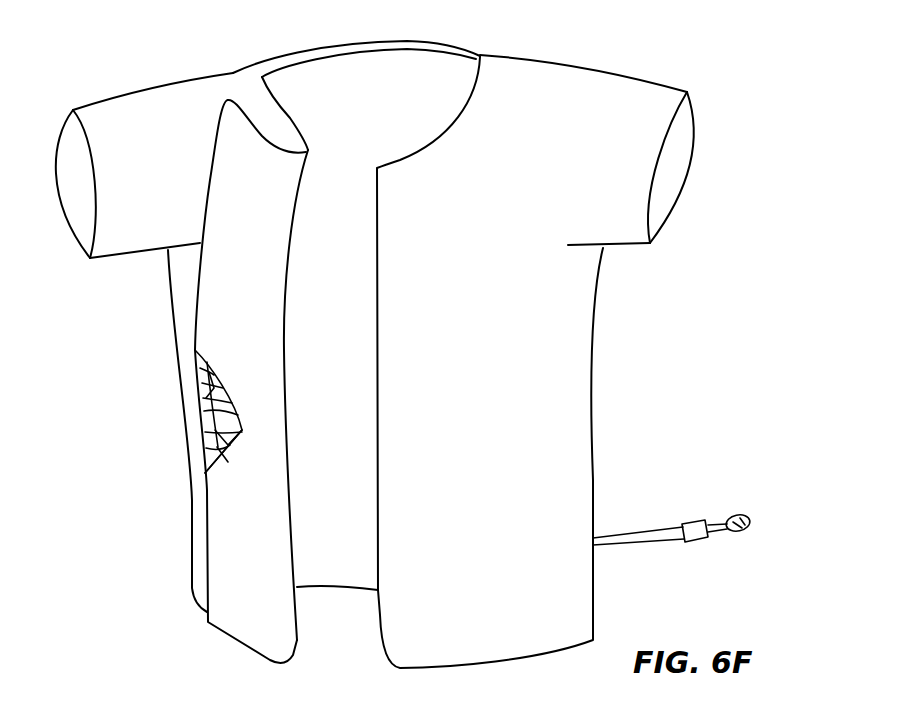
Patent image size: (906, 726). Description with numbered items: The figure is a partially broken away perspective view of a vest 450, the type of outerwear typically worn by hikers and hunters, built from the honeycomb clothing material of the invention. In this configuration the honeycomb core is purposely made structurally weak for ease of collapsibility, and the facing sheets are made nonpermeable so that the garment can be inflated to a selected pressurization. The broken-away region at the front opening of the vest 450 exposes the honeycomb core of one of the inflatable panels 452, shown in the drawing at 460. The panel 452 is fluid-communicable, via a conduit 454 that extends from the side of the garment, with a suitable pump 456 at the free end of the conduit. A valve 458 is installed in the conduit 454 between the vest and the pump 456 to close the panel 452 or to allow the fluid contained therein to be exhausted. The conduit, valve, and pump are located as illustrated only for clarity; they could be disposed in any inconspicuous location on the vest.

The vest 450 is at (672, 418).
The panel 452 is at (242, 419).
The mesh panel of pocket 460 is at (220, 468).
The conduit 454 is at (630, 537).
The valve 458 is at (700, 533).
The pump 456 is at (750, 523).